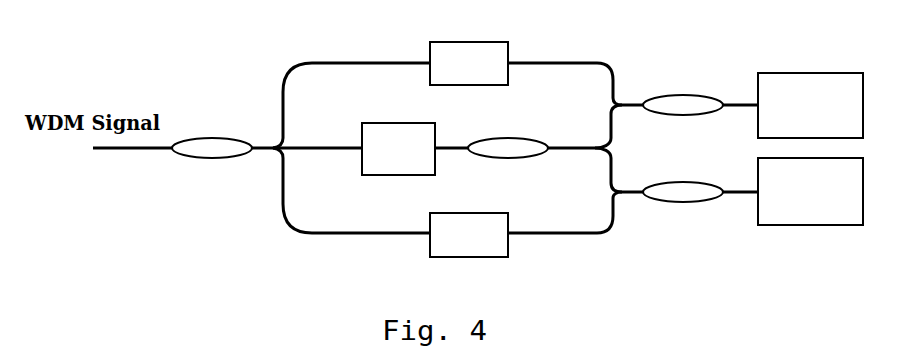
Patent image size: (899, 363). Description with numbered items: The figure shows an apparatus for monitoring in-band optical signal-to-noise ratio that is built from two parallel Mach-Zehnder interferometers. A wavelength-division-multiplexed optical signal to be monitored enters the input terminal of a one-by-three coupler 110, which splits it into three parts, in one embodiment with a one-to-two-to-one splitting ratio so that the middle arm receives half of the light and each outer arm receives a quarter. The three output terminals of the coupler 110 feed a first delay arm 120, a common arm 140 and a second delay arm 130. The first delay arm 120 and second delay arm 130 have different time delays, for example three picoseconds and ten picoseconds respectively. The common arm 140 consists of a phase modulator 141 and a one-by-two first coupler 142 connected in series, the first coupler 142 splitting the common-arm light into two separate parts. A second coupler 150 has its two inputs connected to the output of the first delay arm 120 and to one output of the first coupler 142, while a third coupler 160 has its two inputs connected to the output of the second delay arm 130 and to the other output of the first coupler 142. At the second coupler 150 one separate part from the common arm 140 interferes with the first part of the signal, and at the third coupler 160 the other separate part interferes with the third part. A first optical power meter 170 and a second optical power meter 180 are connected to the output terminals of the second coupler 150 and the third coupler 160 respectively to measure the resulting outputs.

The 1×3 coupler 110 is at (215, 152).
The first delay arm 120 is at (463, 47).
The second delay arm 130 is at (450, 248).
The common arm 140 is at (328, 147).
The phase modulator 141 is at (392, 137).
The first 3 dB coupler 142 is at (522, 150).
The second 3 dB coupler 150 is at (683, 105).
The third 3 dB coupler 160 is at (683, 192).
The first optical power meter 170 is at (822, 80).
The second optical power meter 180 is at (813, 217).